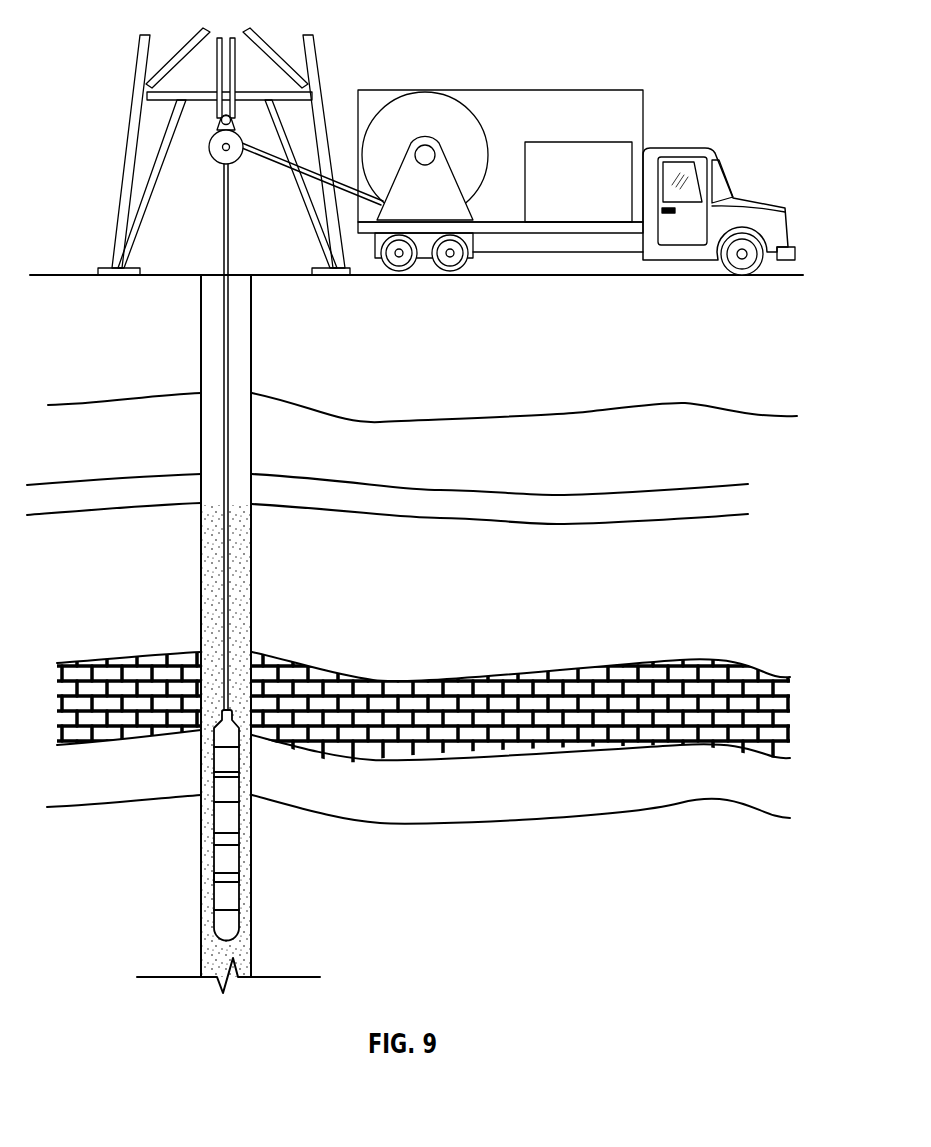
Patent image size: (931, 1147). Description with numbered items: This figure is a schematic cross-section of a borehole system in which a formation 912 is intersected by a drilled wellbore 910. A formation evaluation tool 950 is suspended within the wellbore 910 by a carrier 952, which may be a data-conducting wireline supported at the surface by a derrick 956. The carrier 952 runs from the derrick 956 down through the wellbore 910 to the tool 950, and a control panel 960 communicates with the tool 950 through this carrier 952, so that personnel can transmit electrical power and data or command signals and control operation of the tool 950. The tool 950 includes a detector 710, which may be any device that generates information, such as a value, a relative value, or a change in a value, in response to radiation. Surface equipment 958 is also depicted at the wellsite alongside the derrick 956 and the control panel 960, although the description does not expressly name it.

The derrick 956 is at (123, 98).
The logging truck 958 is at (523, 89).
The control panel 960 is at (578, 140).
The wellbore 910 is at (200, 442).
The carrier 952 is at (230, 588).
The formation 912 is at (542, 799).
The detector 710 is at (227, 877).
The formation evaluation tool 950 is at (267, 825).